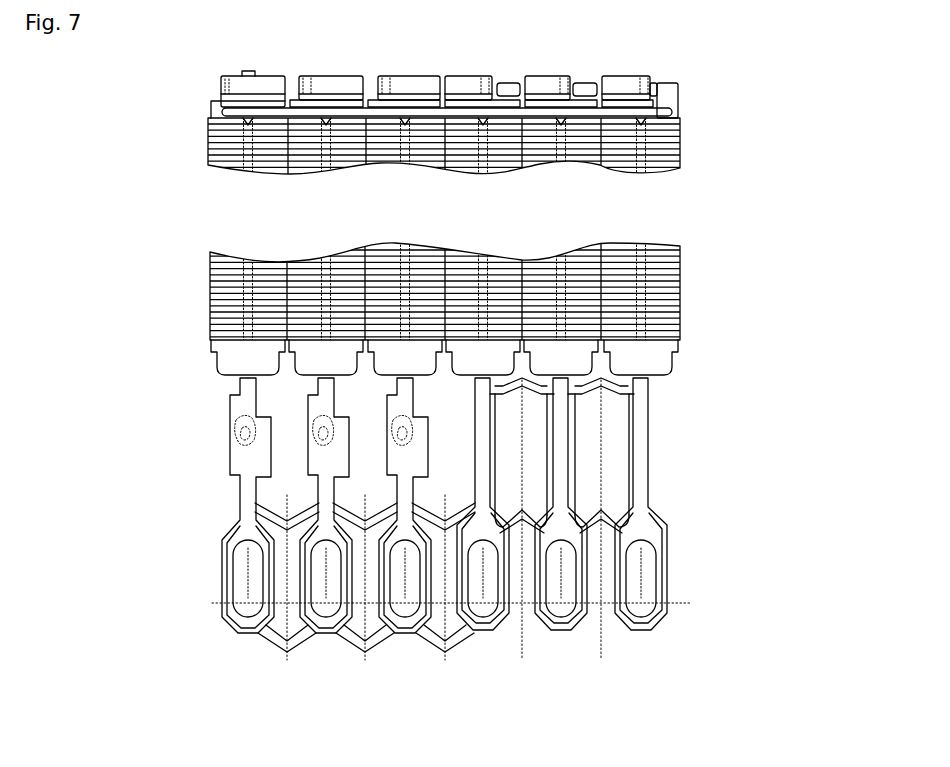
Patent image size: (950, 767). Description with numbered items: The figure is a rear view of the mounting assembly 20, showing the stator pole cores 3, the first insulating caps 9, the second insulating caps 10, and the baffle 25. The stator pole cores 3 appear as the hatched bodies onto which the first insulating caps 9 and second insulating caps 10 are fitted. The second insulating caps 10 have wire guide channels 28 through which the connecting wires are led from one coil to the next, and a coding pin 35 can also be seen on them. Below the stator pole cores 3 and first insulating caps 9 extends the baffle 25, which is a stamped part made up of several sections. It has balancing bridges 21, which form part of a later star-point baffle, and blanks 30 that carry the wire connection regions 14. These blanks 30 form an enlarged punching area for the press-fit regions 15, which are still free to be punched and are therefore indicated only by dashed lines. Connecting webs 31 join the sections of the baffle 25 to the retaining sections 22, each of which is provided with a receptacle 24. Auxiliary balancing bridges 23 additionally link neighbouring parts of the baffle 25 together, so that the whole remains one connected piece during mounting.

The stator pole cores 3 is at (681, 277).
The first insulating caps 9 is at (232, 364).
The second insulating caps 10 is at (226, 84).
The wire connection regions 14 is at (230, 394).
The press-fit regions 15 is at (242, 448).
The mounting assembly 20 is at (770, 147).
The balancing bridges 21 is at (597, 388).
The retaining sections 22 is at (662, 546).
The auxiliary balancing bridges 23 is at (255, 503).
The receptacles 24 is at (247, 574).
The baffle 25 is at (670, 626).
The wire guide channels 28 is at (573, 97).
The blanks 30 is at (240, 431).
The connecting webs 31 is at (247, 491).
The coding pin 35 is at (239, 73).